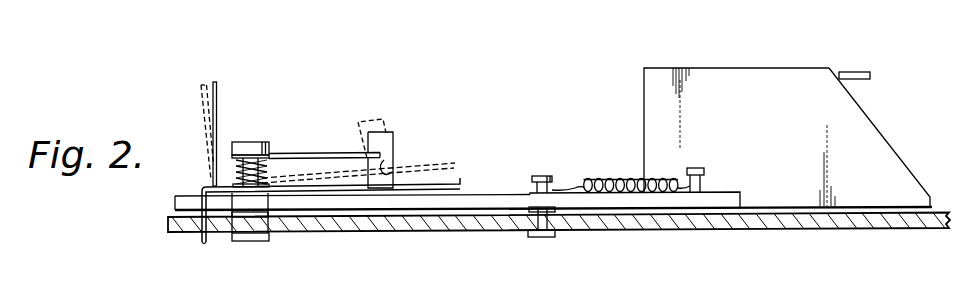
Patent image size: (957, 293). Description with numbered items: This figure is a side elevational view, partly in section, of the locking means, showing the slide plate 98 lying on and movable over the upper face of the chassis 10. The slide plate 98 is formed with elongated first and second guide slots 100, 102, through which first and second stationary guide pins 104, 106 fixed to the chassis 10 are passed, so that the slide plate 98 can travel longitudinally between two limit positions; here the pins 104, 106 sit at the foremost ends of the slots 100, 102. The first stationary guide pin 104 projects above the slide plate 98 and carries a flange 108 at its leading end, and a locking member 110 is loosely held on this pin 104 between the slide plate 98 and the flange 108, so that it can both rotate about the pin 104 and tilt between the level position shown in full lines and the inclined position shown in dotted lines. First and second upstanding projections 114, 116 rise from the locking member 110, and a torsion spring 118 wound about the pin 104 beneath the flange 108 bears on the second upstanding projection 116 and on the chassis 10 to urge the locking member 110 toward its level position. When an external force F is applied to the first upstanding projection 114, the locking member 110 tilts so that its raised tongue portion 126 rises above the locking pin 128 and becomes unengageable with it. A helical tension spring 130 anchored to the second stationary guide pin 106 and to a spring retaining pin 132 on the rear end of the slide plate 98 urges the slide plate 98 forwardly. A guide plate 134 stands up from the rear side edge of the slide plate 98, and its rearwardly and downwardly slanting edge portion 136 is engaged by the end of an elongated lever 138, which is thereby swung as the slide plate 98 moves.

The chassis 10 is at (805, 230).
The slide plate 98 is at (484, 210).
The first guide slot 100 is at (335, 200).
The second guide slot 102 is at (634, 196).
The first stationary guide pin 104 is at (233, 158).
The second stationary guide pin 106 is at (528, 184).
The flange 108 is at (270, 148).
The locking member 110 is at (459, 184).
The first upstanding projection 114 is at (209, 164).
The second upstanding projection 116 is at (393, 134).
The torsion spring 118 is at (330, 153).
The raised tongue portion 126 is at (405, 177).
The locking pin 128 is at (396, 192).
The helical tension spring 130 is at (610, 177).
The spring retaining pin 132 is at (705, 190).
The guide plate 134 is at (643, 83).
The edge portion 136 is at (904, 156).
The elongated lever 138 is at (866, 80).
The external force F is at (218, 94).